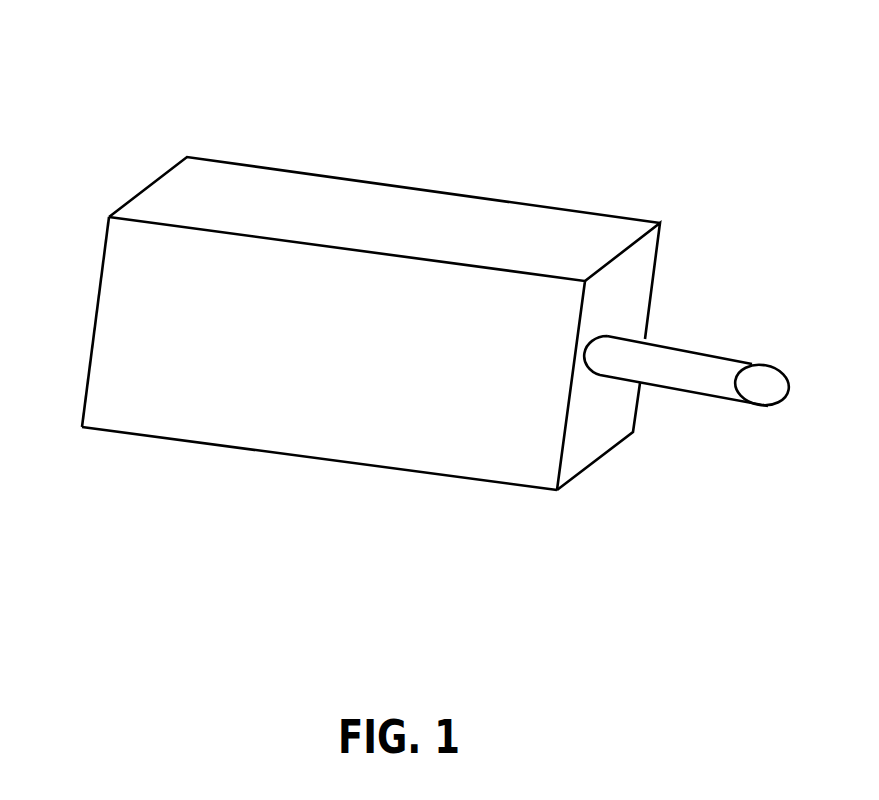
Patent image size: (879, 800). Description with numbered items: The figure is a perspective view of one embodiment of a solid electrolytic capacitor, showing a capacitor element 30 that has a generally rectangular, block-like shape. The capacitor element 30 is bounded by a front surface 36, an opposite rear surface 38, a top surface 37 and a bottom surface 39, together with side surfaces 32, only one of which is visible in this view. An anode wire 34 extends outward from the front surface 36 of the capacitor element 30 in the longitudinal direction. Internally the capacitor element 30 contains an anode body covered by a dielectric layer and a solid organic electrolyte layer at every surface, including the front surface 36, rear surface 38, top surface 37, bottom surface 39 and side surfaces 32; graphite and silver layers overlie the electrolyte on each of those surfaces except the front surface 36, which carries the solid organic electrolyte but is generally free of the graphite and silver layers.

The capacitor element 30 is at (506, 118).
The side surface 32 is at (162, 407).
The anode wire 34 is at (715, 357).
The front surface 36 is at (630, 292).
The top surface 37 is at (233, 192).
The rear surface 38 is at (97, 313).
The bottom surface 39 is at (355, 465).